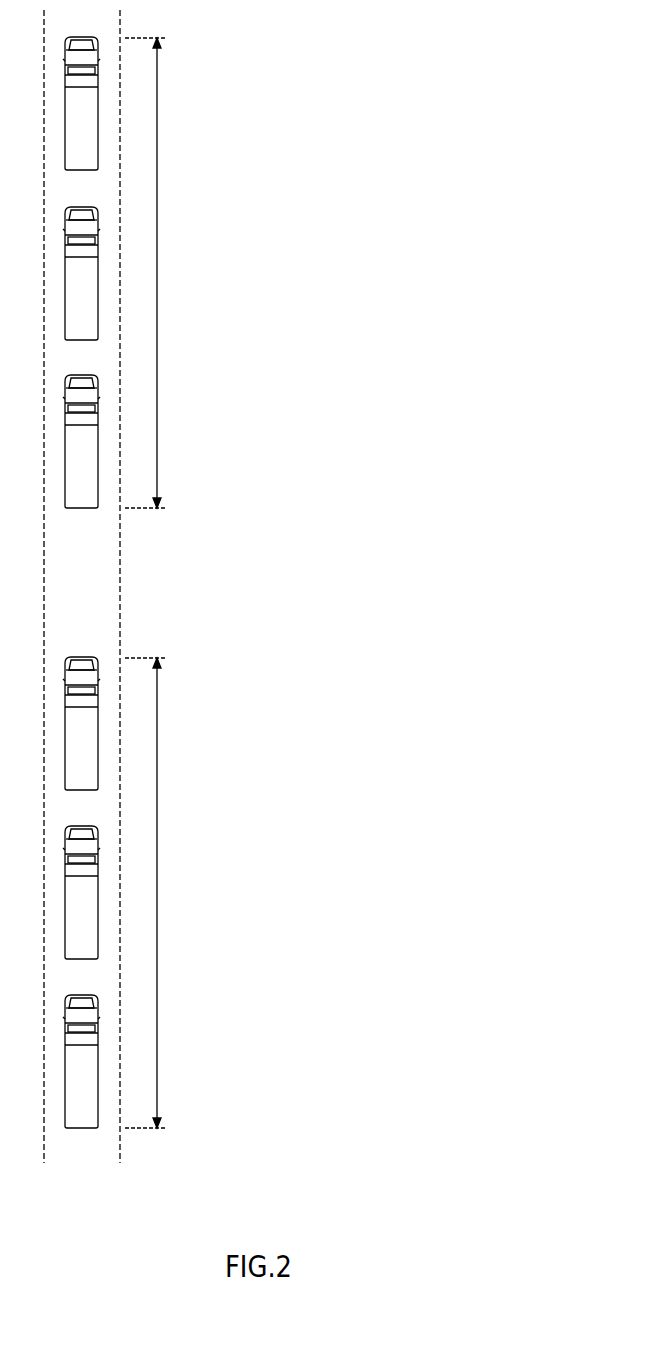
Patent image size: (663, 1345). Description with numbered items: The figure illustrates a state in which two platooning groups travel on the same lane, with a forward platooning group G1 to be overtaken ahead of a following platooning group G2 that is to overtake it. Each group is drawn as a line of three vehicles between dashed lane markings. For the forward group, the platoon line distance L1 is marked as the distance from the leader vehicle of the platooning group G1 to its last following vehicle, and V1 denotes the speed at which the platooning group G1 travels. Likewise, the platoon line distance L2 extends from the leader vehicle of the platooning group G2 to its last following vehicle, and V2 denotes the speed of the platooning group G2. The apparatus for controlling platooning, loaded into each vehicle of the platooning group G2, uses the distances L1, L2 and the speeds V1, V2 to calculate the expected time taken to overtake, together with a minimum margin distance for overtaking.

The platooning group to be overtaken G1 is at (266, 272).
The platoon line distance of platooning group G1 L1 is at (336, 273).
The speed of platooning group G1 V1 is at (274, 272).
The platooning group to overtake G2 is at (266, 892).
The platoon line distance of platooning group G2 L2 is at (336, 893).
The speed of platooning group G2 V2 is at (274, 892).